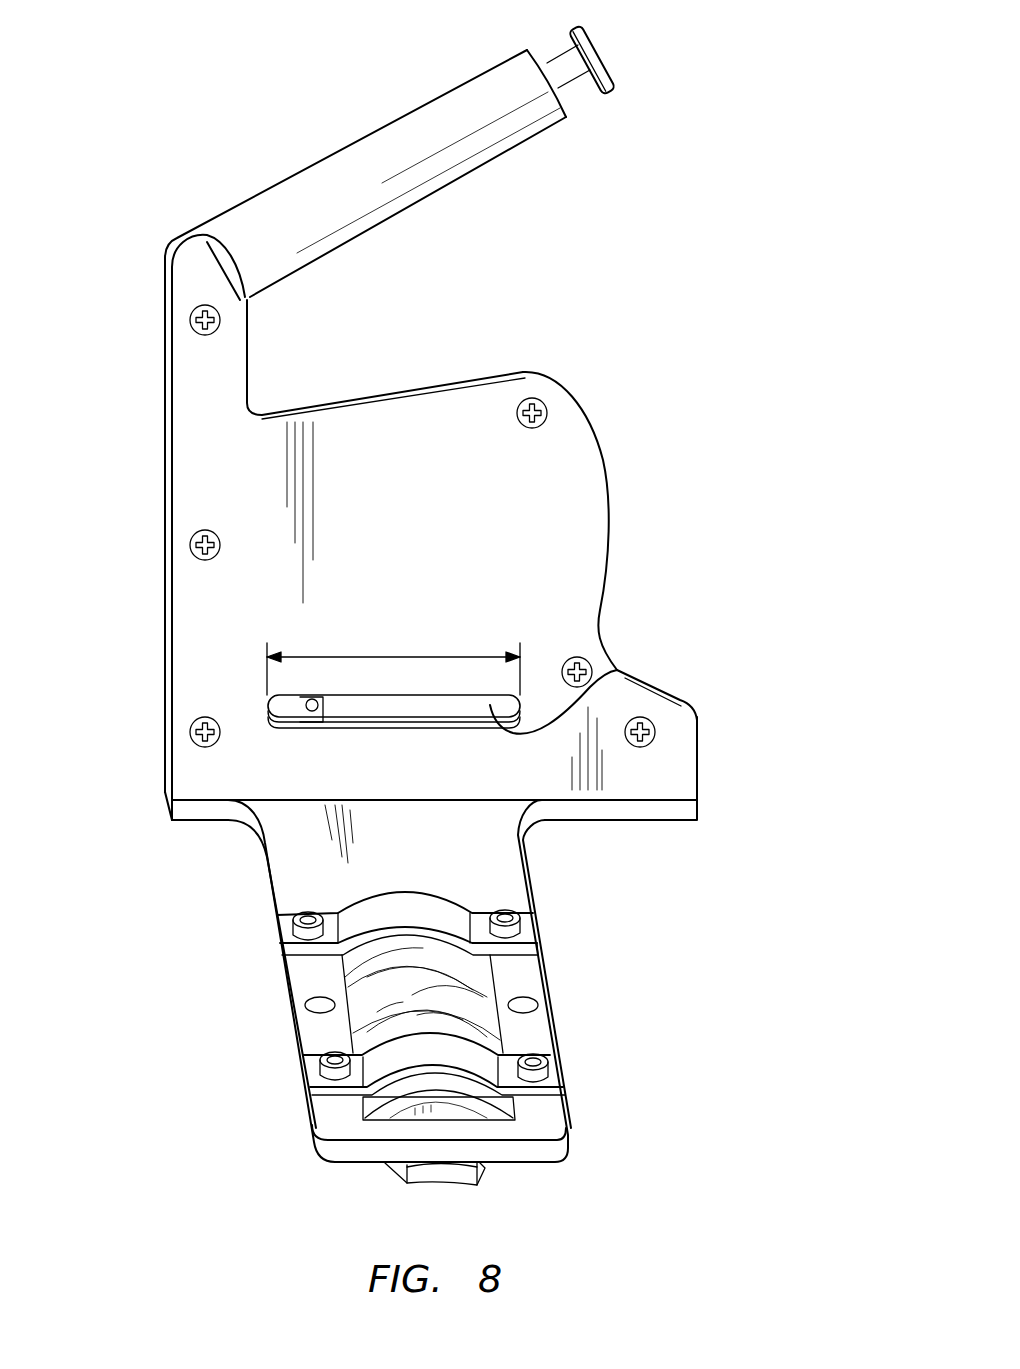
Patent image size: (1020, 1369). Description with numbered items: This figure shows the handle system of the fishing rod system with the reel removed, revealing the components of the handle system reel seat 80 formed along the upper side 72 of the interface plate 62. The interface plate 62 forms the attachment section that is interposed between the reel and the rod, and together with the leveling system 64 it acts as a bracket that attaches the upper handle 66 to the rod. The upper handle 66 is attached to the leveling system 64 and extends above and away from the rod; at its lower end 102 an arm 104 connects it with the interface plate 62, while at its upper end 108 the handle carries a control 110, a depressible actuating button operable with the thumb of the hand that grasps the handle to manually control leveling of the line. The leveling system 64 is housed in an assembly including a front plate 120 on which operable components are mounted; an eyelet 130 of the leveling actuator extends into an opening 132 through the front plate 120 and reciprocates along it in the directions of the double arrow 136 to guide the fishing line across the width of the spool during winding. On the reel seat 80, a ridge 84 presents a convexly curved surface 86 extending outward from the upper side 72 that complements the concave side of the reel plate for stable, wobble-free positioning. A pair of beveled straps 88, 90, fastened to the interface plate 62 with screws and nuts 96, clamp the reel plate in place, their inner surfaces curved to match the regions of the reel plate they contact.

The interface plate 62 is at (527, 868).
The leveling system 64 is at (465, 492).
The upper handle 66 is at (323, 155).
The upper side 72 is at (434, 852).
The handle system reel seat 80 is at (385, 997).
The ridge 84 is at (418, 990).
The surface 86 is at (437, 1087).
The beveled strap 88 is at (405, 1055).
The beveled strap 90 is at (397, 912).
The nuts 96 is at (293, 927).
The lower end 102 is at (168, 232).
The arm 104 is at (247, 347).
The upper end 108 is at (572, 107).
The control 110 is at (605, 55).
The front plate 120 is at (572, 512).
The eyelet 130 is at (305, 705).
The opening 132 is at (617, 670).
The double arrow 136 is at (395, 657).